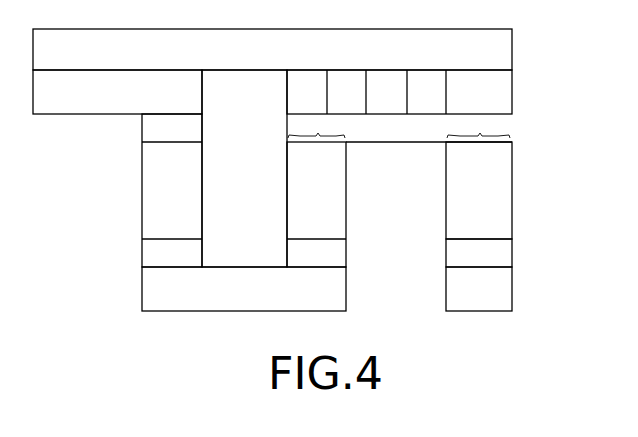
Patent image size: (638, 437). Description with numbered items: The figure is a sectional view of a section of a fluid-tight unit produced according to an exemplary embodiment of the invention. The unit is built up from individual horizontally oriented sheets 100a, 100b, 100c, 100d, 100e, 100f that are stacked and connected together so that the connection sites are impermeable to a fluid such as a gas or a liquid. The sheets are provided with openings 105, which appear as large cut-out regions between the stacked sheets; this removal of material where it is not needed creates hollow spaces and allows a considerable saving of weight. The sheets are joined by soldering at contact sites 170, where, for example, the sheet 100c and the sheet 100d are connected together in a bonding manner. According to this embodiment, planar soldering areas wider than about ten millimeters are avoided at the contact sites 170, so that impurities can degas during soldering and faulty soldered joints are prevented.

The sheet 100a is at (108, 62).
The sheet 100b is at (108, 104).
The sheet 100c is at (150, 132).
The sheet 100d is at (502, 195).
The sheet 100e is at (497, 252).
The sheet 100f is at (497, 292).
The opening 105 is at (262, 177).
The contact site 170 is at (318, 128).